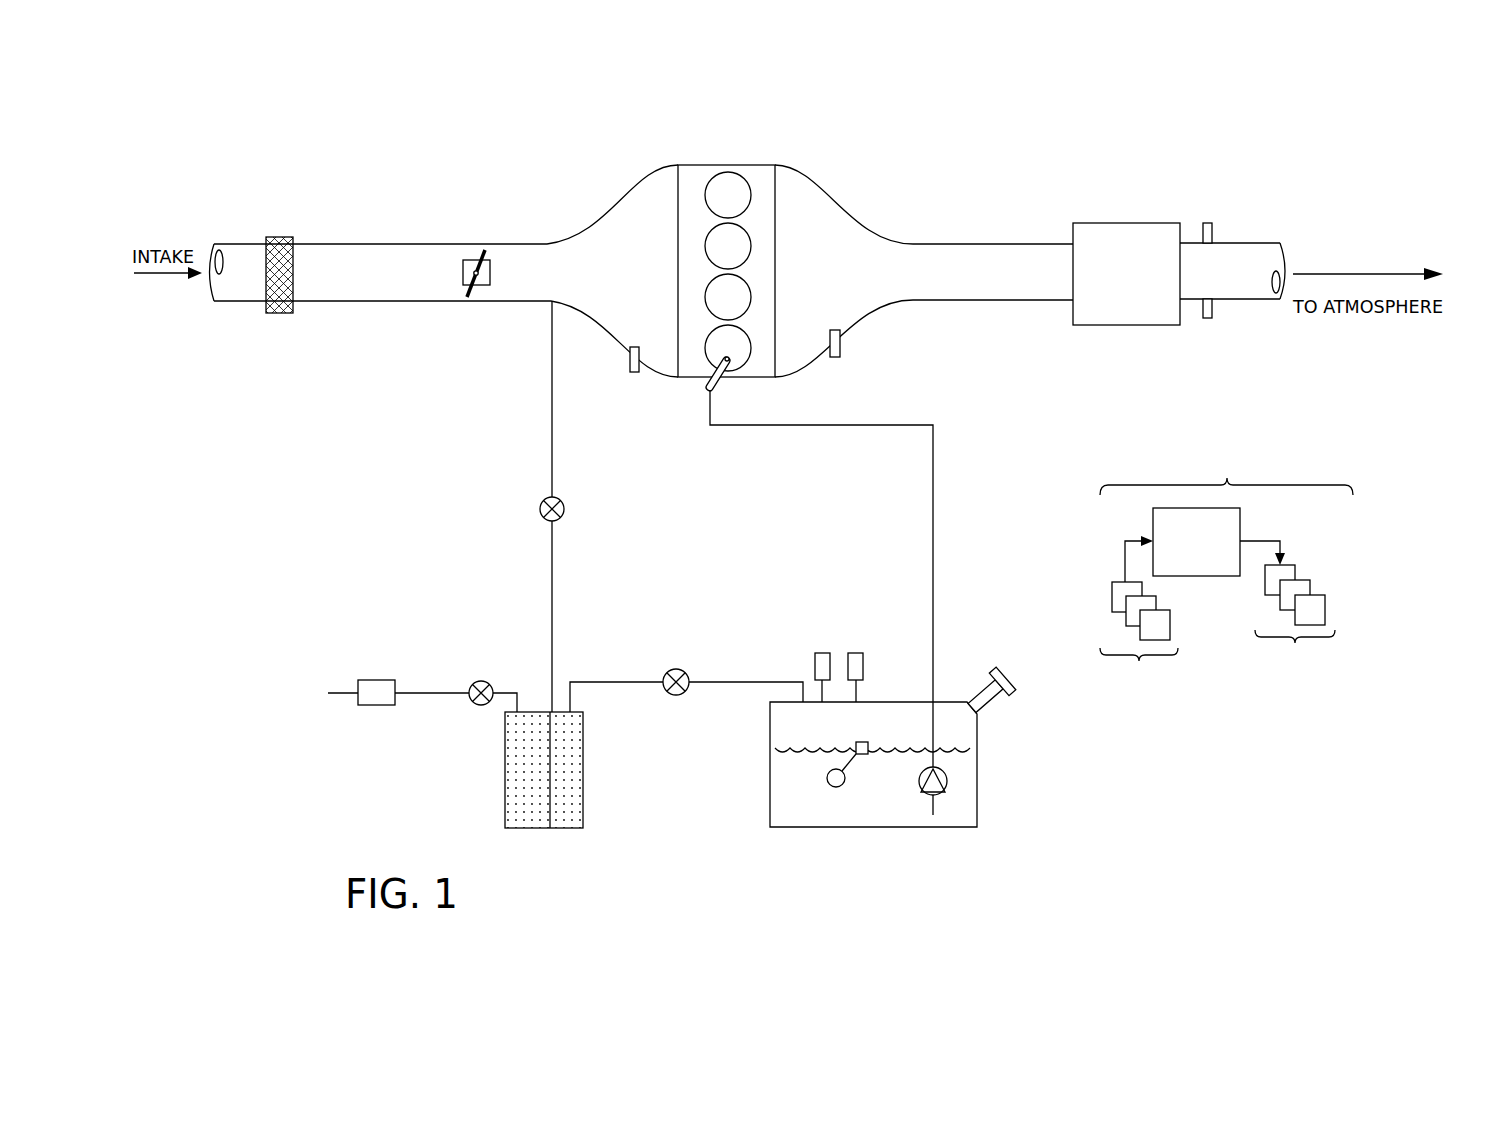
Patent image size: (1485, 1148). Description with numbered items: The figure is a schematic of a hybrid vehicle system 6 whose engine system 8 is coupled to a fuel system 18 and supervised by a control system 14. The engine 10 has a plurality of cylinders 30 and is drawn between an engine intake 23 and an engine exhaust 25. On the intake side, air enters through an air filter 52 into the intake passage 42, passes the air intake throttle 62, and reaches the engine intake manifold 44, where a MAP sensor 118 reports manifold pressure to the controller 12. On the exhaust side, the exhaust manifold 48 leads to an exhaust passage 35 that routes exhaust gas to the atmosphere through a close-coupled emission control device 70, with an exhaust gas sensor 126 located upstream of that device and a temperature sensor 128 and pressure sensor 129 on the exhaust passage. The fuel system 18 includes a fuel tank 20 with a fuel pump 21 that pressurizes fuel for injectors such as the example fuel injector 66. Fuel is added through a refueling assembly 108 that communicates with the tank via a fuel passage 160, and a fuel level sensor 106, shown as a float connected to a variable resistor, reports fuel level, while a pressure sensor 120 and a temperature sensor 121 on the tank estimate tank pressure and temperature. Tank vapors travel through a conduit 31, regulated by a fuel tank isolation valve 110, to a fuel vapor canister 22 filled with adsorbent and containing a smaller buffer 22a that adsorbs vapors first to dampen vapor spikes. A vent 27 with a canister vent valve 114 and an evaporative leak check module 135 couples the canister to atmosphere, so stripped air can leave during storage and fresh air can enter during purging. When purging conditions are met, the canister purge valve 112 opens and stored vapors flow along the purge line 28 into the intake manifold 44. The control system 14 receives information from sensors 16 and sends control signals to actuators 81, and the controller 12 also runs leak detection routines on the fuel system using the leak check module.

The hybrid vehicle system 6 is at (226, 141).
The engine system 8 is at (1320, 139).
The engine 10 is at (776, 256).
The controller 12 is at (1205, 545).
The control system 14 is at (1226, 465).
The sensors 16 is at (1139, 642).
The fuel system 18 is at (1026, 859).
The fuel tank 20 is at (770, 827).
The fuel pump 21 is at (947, 781).
The fuel vapor canister 22 is at (520, 828).
The buffer 22a is at (569, 828).
The engine intake 23 is at (599, 188).
The engine exhaust 25 is at (892, 198).
The vent 27 is at (450, 693).
The purge line 28 is at (552, 468).
The cylinders 30 is at (749, 184).
The conduit 31 is at (728, 682).
The exhaust passage 35 is at (1259, 243).
The intake passage 42 is at (243, 302).
The engine intake manifold 44 is at (612, 271).
The exhaust manifold 48 is at (844, 271).
The air filter 52 is at (281, 237).
The air intake throttle 62 is at (490, 279).
The fuel injector 66 is at (722, 381).
The emission control device 70 is at (1114, 223).
The actuators 81 is at (1295, 625).
The fuel level sensor 106 is at (866, 742).
The refueling assembly 108 is at (1005, 672).
The fuel tank isolation valve 110 is at (670, 670).
The canister purge valve 112 is at (561, 503).
The canister vent valve 114 is at (484, 682).
The MAP sensor 118 is at (630, 350).
The pressure sensor 120 is at (863, 661).
The temperature sensor 121 is at (822, 653).
The exhaust gas sensor 126 is at (840, 339).
The temperature sensor 128 is at (1207, 318).
The pressure sensor 129 is at (1207, 223).
The evaporative leak check module 135 is at (367, 680).
The fuel passage 160 is at (983, 699).